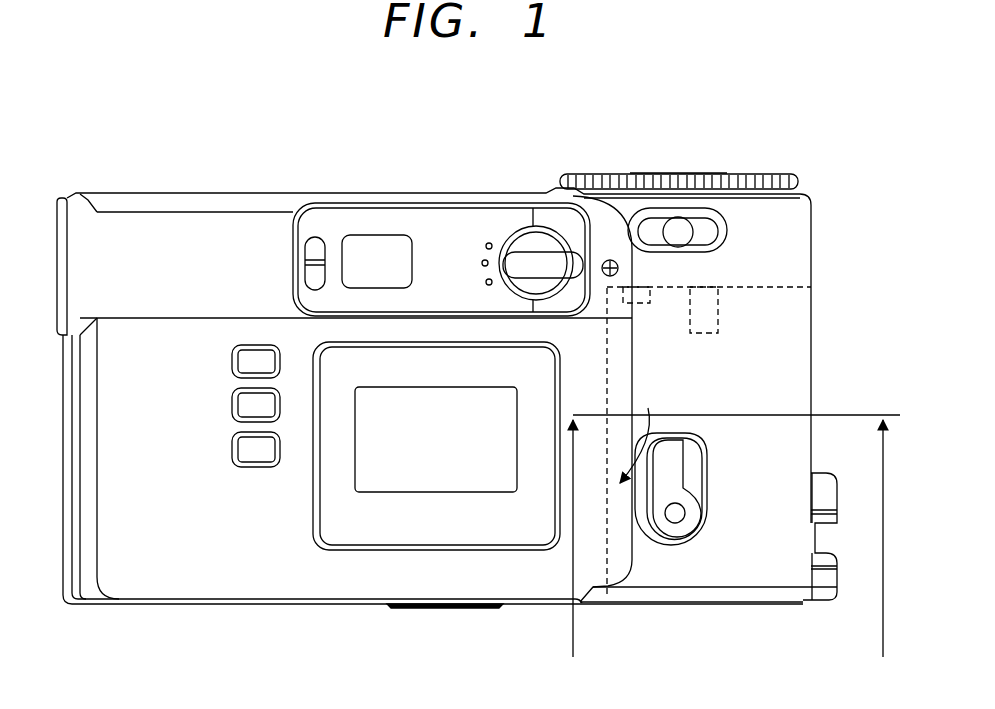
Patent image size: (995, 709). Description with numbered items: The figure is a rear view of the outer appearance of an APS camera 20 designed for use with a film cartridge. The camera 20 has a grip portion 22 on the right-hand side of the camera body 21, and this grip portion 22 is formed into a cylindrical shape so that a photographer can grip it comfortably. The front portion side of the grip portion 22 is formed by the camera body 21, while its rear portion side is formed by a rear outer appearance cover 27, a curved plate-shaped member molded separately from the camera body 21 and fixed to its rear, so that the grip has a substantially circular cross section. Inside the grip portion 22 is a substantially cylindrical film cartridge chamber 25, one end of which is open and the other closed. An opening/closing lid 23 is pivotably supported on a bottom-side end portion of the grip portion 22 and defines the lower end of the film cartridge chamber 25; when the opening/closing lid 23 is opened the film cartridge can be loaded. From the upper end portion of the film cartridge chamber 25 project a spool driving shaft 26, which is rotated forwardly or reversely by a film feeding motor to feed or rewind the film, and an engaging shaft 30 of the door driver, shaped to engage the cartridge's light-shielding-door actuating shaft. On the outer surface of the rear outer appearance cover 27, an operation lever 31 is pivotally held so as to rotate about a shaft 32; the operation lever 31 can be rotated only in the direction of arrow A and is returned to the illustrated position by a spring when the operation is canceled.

The camera 20 is at (565, 158).
The camera body 21 is at (350, 580).
The grip portion 22 is at (800, 235).
The opening/closing lid 23 is at (645, 598).
The film cartridge chamber 25 is at (780, 332).
The spool driving shaft 26 is at (703, 300).
The rear outer appearance cover 27 is at (787, 398).
The engaging shaft 30 is at (628, 300).
The operation lever 31 is at (675, 474).
The shaft 32 is at (680, 518).